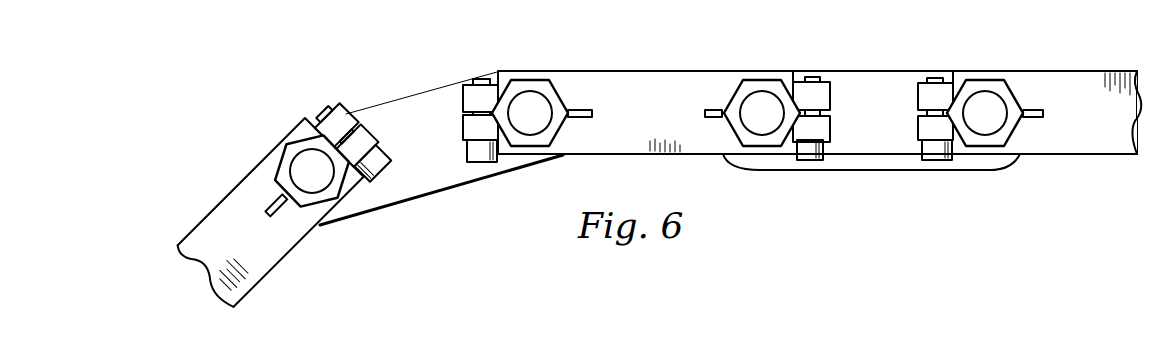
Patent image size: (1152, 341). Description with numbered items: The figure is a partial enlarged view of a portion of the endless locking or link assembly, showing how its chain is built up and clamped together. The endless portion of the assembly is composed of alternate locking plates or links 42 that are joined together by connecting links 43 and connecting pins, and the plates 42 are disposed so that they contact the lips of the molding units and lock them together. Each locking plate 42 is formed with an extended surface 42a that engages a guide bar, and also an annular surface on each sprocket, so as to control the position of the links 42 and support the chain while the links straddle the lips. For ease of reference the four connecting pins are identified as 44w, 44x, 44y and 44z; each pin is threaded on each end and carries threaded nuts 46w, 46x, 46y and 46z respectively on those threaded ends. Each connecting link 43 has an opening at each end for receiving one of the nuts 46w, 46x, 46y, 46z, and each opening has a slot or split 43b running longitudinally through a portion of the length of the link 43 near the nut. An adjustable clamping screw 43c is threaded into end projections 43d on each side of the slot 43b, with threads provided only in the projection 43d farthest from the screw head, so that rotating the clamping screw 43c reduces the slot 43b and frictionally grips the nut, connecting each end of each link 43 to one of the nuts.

The locking plate 42 is at (399, 196).
The extended surface 42a is at (425, 197).
The connecting link 43 is at (210, 223).
The slot 43b is at (583, 104).
The clamping screw 43c is at (468, 155).
The end projection 43d is at (465, 133).
The connecting pin 44w is at (305, 167).
The connecting pin 44x is at (530, 100).
The connecting pin 44y is at (762, 97).
The connecting pin 44z is at (985, 100).
The threaded nut 46w is at (277, 173).
The threaded nut 46x is at (558, 84).
The threaded nut 46y is at (731, 82).
The threaded nut 46z is at (1013, 92).